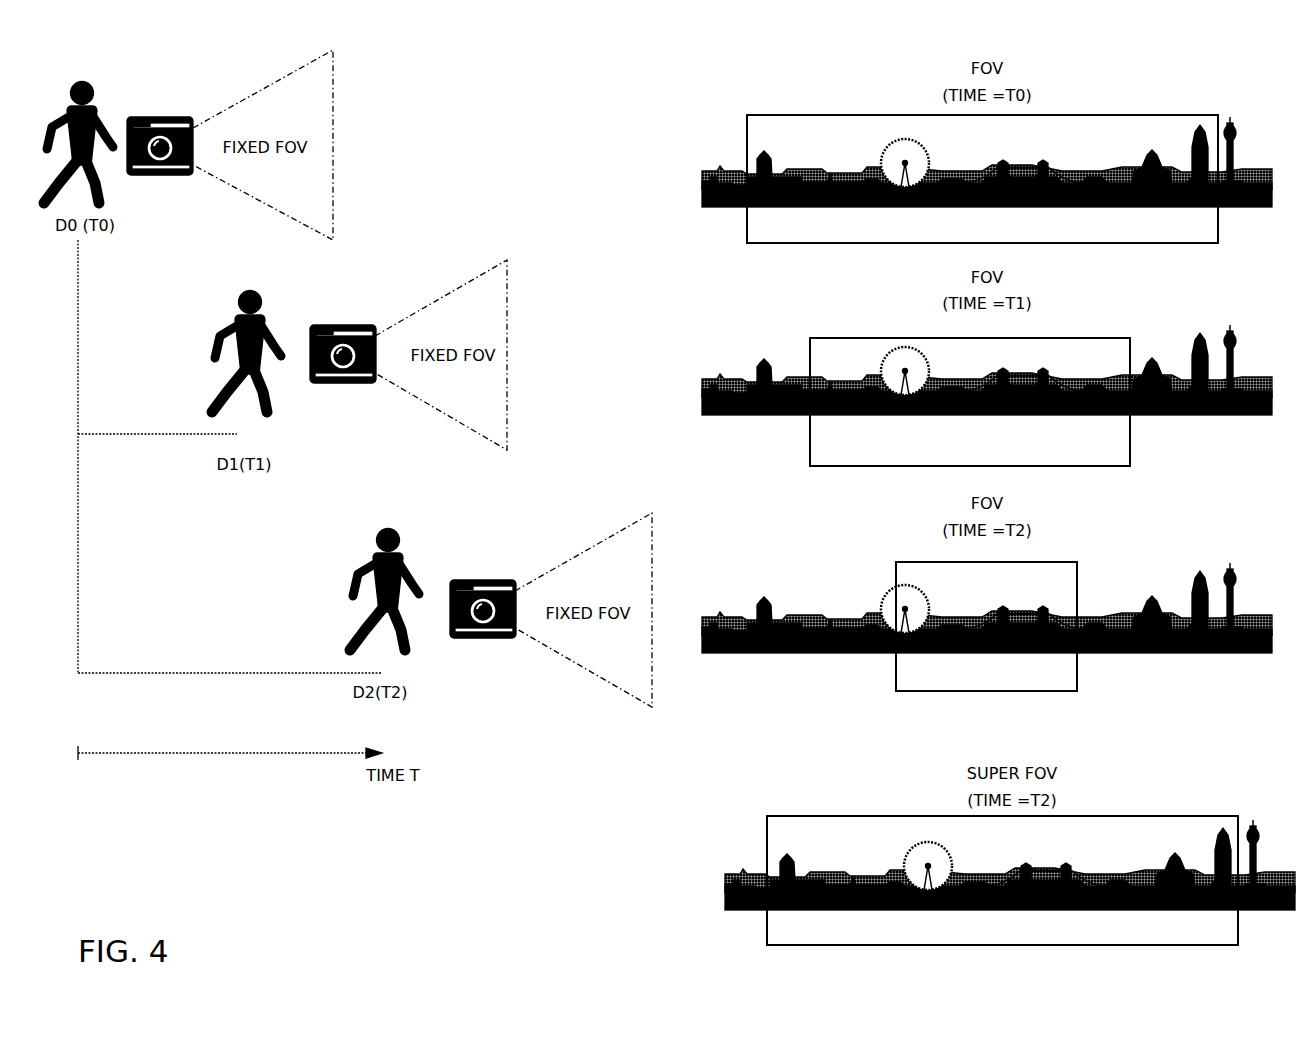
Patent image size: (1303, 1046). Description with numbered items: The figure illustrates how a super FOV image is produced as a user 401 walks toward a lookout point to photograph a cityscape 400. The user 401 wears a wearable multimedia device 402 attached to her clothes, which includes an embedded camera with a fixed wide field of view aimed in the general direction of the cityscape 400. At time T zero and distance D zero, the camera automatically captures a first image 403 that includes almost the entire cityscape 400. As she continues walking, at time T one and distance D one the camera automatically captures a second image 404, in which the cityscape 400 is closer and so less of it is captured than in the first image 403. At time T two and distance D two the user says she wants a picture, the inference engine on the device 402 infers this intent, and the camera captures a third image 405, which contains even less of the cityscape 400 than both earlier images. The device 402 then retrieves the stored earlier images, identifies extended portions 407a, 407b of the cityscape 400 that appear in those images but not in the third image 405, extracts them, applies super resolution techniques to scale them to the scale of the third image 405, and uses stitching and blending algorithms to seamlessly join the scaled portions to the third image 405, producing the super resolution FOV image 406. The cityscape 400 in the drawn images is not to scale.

The cityscape 400 is at (683, 138).
The user 401 is at (86, 80).
The wearable multimedia device 402 is at (158, 117).
The first image 403 is at (1224, 113).
The second image 404 is at (1131, 338).
The third image 405 is at (1077, 561).
The super resolution FOV image 406 is at (1235, 816).
The extended portion 407a is at (808, 580).
The extended portion 407b is at (1142, 565).